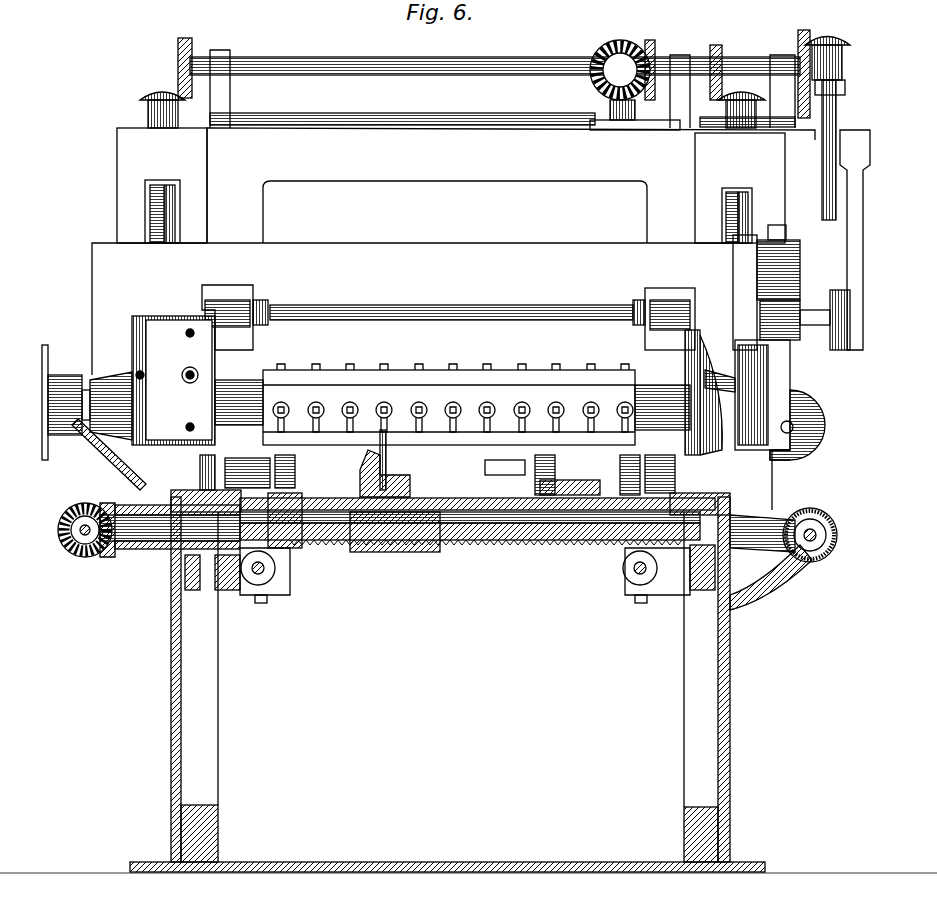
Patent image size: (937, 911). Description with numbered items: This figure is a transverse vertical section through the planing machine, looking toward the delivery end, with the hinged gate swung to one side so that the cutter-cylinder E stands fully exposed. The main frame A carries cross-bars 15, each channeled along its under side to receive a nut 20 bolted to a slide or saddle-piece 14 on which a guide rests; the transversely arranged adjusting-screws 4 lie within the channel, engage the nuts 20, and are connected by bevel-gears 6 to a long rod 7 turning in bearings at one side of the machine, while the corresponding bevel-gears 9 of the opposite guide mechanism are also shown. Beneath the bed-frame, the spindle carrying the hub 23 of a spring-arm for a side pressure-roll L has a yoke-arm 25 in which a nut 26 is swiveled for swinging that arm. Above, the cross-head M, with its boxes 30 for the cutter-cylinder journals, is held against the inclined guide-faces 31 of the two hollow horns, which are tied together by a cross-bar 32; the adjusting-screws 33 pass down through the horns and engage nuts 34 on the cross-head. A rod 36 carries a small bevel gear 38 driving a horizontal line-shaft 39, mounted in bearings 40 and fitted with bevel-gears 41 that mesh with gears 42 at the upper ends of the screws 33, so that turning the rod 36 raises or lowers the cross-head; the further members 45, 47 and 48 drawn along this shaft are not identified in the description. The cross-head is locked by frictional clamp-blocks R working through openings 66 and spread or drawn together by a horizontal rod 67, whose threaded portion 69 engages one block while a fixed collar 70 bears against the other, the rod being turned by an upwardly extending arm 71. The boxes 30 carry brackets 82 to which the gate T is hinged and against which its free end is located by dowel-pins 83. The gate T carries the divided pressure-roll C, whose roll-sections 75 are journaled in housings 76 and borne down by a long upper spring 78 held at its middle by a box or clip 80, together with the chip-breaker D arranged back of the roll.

The adjusting-screws 4 is at (400, 529).
The bevel-gears 6 is at (108, 552).
The long rod 7 is at (78, 545).
The bevel-gears 9 is at (796, 515).
The slides or saddle-pieces 14 is at (372, 495).
The cross-bars 15 is at (432, 500).
The nut 20 is at (251, 571).
The hub 23 is at (265, 568).
The yoke-arm 25 is at (255, 592).
The nut 26 is at (270, 580).
The boxes 30 is at (413, 309).
The front inclined guide-faces 31 is at (162, 185).
The cross plate or bar 32 is at (511, 185).
The adjusting-screws 33 is at (147, 198).
The nuts 34 is at (172, 218).
The rod 36 is at (826, 190).
The small miter or bevel gear 38 is at (800, 40).
The horizontal line-shaft 39 is at (495, 83).
The bearings 40 is at (232, 89).
The bevel-gears 41 is at (174, 61).
The gears 42 is at (142, 110).
The pedestal 45 is at (605, 118).
The gear wheel 47 is at (617, 60).
The bevel gear 48 is at (650, 60).
The openings or mortises 66 is at (256, 300).
The horizontal rod 67 is at (451, 302).
The threaded portion 69 is at (263, 325).
The fixed collar or shoulder 70 is at (636, 305).
The upwardly-extending arm 71 is at (850, 238).
The roll-sections 75 is at (815, 445).
The frames or housings 76 is at (782, 417).
The long upper spring 78 is at (796, 282).
The box or clip 80 is at (792, 246).
The bracket 82 is at (173, 380).
The dowel-pins 83 is at (702, 382).
The main frame A is at (447, 681).
The divided pressure-roll C is at (781, 395).
The chip-breaker D is at (722, 452).
The cutter-cylinder E is at (445, 455).
The side pressure-rolls L is at (437, 474).
The cross-head M is at (414, 265).
The clamp-blocks R is at (248, 274).
The gate or hinged plate T is at (725, 287).